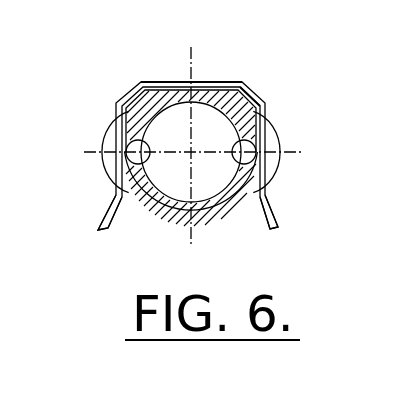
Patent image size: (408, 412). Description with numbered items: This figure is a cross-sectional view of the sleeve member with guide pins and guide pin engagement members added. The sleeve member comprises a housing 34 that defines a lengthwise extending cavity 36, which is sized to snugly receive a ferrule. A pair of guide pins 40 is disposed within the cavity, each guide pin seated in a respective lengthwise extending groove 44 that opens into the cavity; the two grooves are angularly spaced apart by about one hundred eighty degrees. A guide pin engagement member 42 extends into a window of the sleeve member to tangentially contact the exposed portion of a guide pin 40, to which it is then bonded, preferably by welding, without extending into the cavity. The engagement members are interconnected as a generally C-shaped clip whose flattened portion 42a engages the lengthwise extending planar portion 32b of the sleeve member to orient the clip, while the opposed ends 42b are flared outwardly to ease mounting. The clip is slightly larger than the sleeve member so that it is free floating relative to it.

The lengthwise extending planar portion 32b is at (222, 96).
The housing 34 is at (250, 98).
The lengthwise extending cavity 36 is at (190, 90).
The guide pin 40 is at (129, 142).
The guide pin engagement member 42 is at (114, 176).
The flattened portion 42a is at (157, 84).
The opposed ends 42b is at (108, 227).
The lengthwise extending groove 44 is at (253, 142).